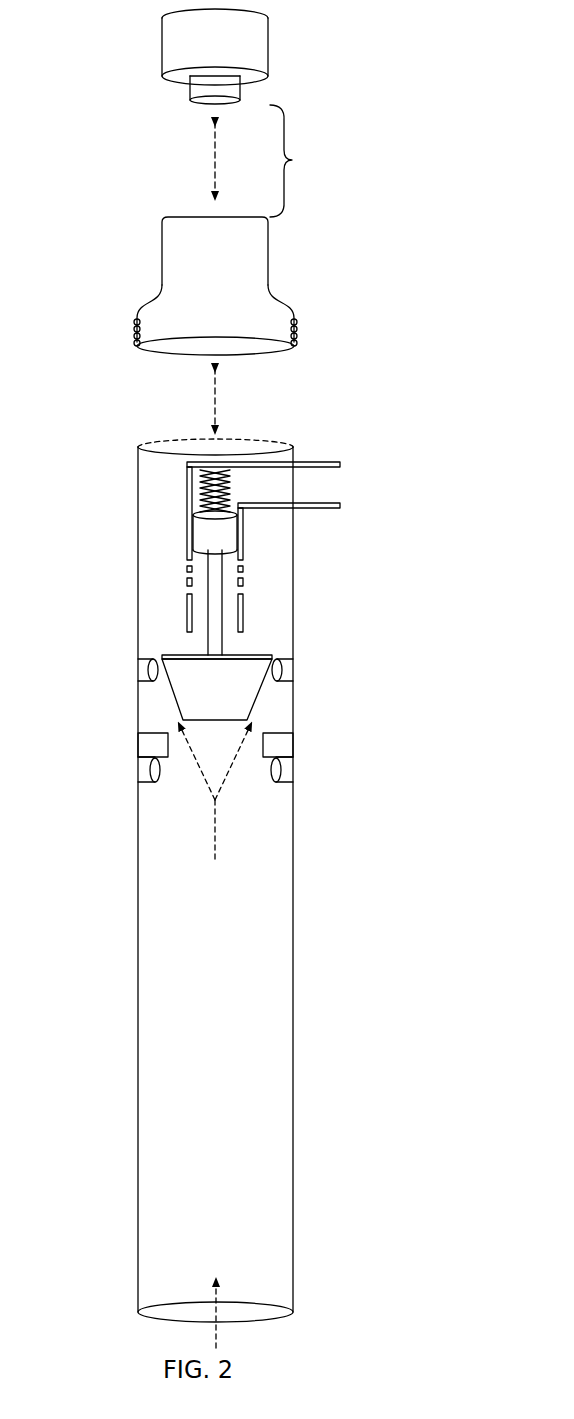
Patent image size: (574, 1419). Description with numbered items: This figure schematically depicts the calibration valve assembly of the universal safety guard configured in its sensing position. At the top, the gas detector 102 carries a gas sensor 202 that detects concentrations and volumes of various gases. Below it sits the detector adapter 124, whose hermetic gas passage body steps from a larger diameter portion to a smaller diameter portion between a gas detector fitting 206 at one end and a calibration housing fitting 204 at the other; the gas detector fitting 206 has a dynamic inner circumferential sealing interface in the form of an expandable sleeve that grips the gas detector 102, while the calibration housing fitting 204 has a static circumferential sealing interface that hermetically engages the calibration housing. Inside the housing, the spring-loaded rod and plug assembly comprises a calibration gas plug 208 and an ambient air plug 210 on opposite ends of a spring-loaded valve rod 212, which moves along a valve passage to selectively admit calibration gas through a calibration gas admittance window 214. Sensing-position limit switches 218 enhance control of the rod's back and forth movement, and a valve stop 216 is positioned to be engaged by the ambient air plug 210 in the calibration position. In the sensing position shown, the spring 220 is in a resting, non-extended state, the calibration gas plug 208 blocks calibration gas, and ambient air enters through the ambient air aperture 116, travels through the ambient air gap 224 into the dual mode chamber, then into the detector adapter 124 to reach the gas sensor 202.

The gas detector 102 is at (270, 47).
The gas sensor 202 is at (243, 99).
The gas detector fitting 206 is at (168, 217).
The calibration housing fitting 204 is at (161, 353).
The detector adapter 124 is at (350, 272).
The ambient air aperture 116 is at (212, 1312).
The spring 220 is at (230, 470).
The calibration gas plug 208 is at (200, 540).
The calibration gas admittance window 214 is at (187, 583).
The spring-loaded valve rod 212 is at (215, 650).
The ambient air plug 210 is at (262, 657).
The sensing-position limit switch 218 is at (140, 670).
The valve stop 216 is at (140, 745).
The ambient air gap 224 is at (222, 838).